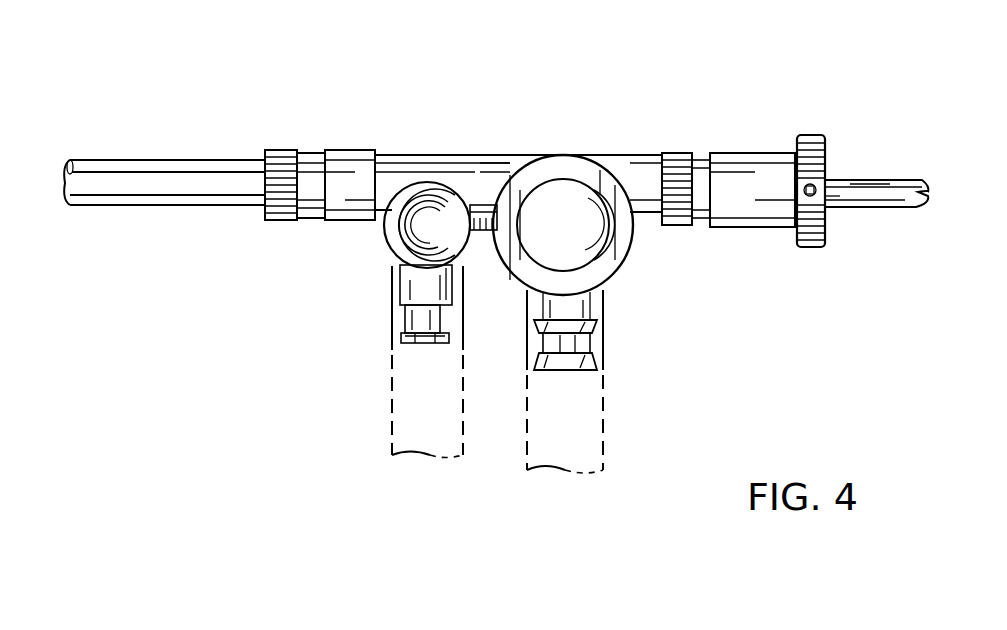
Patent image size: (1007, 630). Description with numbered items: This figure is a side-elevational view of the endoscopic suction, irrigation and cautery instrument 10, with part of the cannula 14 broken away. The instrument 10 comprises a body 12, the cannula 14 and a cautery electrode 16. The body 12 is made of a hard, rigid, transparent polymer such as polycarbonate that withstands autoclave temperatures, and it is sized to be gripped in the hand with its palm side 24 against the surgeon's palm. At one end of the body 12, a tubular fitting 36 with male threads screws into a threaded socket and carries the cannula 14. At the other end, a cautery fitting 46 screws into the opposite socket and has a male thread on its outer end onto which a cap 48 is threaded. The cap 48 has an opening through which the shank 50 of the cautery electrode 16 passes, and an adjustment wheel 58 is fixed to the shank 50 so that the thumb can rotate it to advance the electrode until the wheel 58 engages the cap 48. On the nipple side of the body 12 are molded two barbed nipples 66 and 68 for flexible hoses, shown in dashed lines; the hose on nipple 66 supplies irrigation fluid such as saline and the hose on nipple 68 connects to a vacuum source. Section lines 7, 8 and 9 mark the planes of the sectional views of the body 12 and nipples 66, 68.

The endoscopic suction, irrigation and cautery instrument 10 is at (650, 120).
The body 12 is at (437, 150).
The cannula 14 is at (137, 160).
The cautery electrode 16 is at (845, 172).
The palm side 24 is at (497, 155).
The tubular fitting 36 is at (310, 150).
The cautery fitting 46 is at (688, 150).
The cap 48 is at (748, 152).
The shank 50 is at (833, 208).
The adjustment wheel 58 is at (812, 248).
The nipple 66 is at (407, 345).
The nipple 68 is at (600, 365).
The section line 7- 7 is at (429, 100).
The section line 8- 8 is at (308, 242).
The section line 9- 9 is at (564, 105).